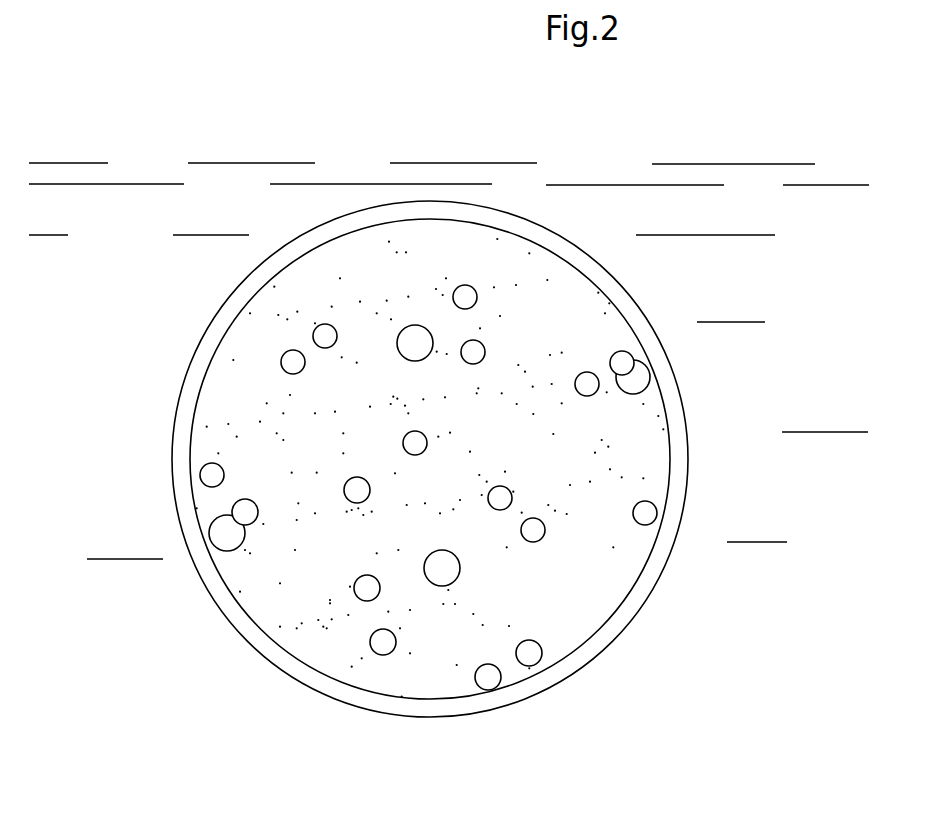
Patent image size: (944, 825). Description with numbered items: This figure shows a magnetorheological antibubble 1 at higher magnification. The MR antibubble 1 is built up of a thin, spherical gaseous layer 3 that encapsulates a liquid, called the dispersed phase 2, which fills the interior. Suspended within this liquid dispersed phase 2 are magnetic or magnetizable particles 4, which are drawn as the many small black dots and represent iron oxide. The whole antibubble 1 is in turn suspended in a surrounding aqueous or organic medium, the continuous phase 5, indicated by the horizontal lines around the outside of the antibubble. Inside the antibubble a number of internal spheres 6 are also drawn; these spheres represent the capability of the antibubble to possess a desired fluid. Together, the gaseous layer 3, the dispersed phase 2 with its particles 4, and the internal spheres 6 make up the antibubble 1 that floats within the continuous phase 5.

The MR antibubble 1 is at (122, 313).
The dispersed phase 2 is at (258, 338).
The gaseous layer 3 is at (203, 357).
The magnetic or magnetizable particles 4 is at (237, 397).
The continuous phase 5 is at (95, 233).
The internal spheres 6 is at (210, 461).